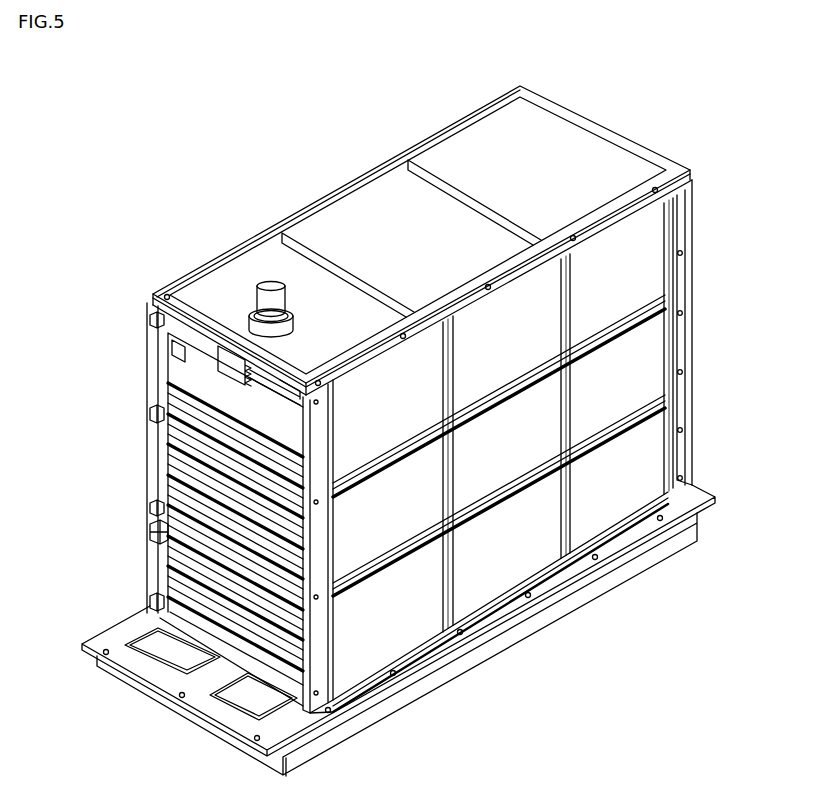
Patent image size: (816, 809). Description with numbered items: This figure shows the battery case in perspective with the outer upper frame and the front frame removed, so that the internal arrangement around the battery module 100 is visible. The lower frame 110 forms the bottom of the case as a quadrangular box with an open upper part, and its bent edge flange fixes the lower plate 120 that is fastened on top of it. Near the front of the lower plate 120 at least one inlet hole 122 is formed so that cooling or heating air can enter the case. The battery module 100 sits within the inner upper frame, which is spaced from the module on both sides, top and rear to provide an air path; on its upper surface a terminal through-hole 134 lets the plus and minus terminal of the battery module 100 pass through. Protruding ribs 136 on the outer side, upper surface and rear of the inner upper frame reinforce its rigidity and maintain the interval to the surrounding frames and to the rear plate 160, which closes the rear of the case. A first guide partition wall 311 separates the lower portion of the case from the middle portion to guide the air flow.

The battery module 100 is at (200, 416).
The lower frame 110 is at (503, 640).
The lower plate 120 is at (247, 731).
The inlet hole 122 is at (253, 699).
The terminal through-hole 134 is at (268, 284).
The rib 136 is at (493, 507).
The rear plate 160 is at (692, 350).
The first guide partition wall 311 is at (152, 530).